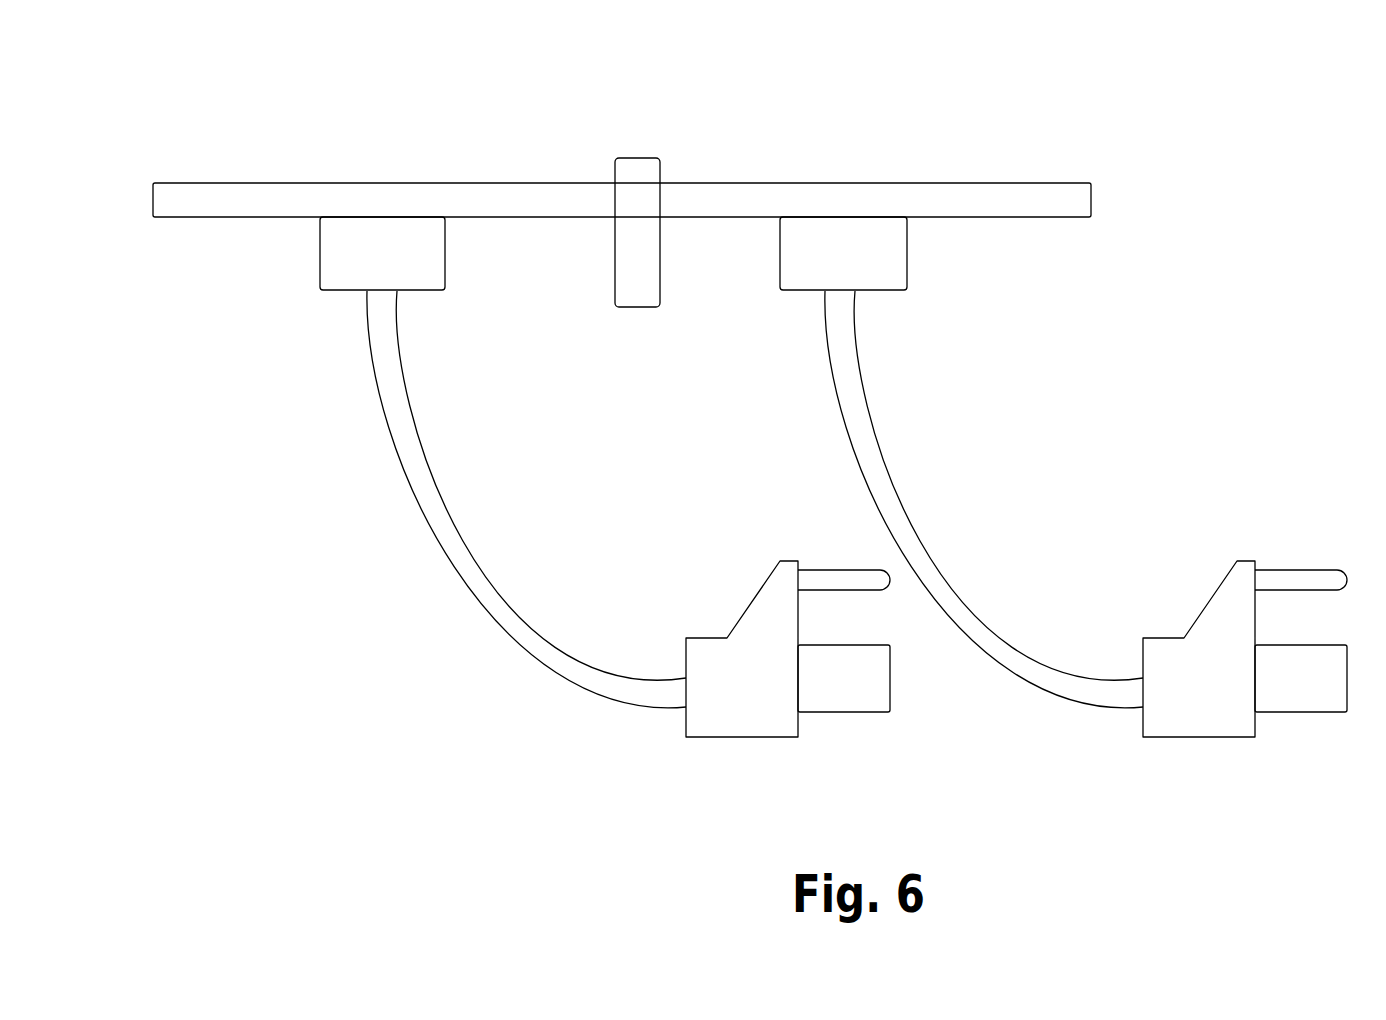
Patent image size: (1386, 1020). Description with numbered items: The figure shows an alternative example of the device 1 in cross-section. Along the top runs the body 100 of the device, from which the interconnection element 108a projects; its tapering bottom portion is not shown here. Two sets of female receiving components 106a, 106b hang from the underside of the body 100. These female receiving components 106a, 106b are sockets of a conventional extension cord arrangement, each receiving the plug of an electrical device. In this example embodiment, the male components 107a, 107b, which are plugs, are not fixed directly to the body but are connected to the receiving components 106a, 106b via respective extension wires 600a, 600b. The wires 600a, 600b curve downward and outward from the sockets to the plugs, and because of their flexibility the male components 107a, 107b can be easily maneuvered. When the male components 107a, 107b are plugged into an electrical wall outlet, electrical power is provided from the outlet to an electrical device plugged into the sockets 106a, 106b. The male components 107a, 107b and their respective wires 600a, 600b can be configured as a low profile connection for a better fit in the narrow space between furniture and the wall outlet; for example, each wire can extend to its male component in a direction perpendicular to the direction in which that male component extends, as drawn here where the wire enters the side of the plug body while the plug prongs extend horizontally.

The device 1 is at (418, 102).
The housing 100 is at (1067, 198).
The female receiving component 106a is at (343, 262).
The female receiving component 106b is at (890, 262).
The male component 107a is at (762, 710).
The male component 107b is at (1193, 710).
The interconnection element 108a is at (632, 158).
The extension wire 600a is at (407, 453).
The extension wire 600b is at (832, 374).